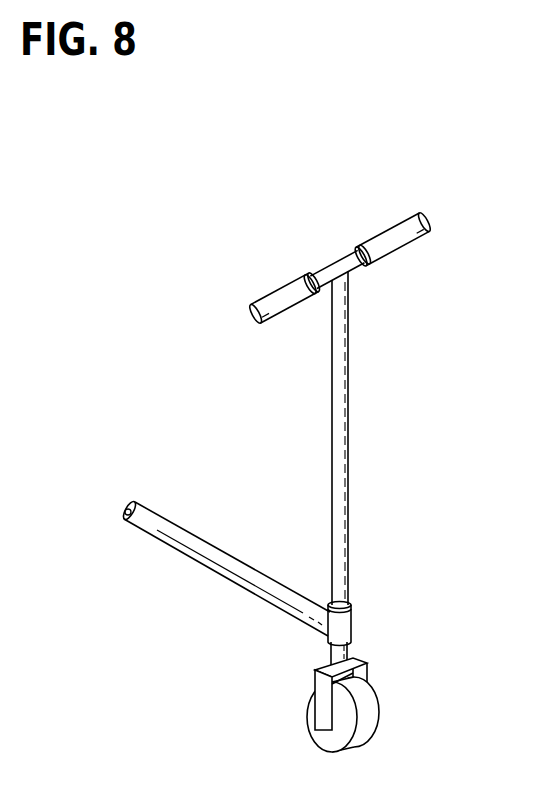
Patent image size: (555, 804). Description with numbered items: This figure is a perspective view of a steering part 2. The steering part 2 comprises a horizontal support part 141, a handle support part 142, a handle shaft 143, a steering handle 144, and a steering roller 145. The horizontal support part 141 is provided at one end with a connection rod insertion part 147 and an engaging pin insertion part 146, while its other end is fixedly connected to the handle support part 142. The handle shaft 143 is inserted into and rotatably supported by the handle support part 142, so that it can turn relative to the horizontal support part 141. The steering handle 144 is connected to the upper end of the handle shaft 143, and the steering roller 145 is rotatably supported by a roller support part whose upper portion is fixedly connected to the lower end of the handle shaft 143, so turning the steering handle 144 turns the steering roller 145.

The steering part 2 is at (134, 106).
The horizontal support part 141 is at (207, 548).
The handle support part 142 is at (345, 623).
The handle shaft 143 is at (348, 475).
The steering handle 144 is at (388, 238).
The steering roller 145 is at (368, 712).
The engaging pin insertion part 146 is at (127, 513).
The connection rod insertion part 147 is at (127, 511).